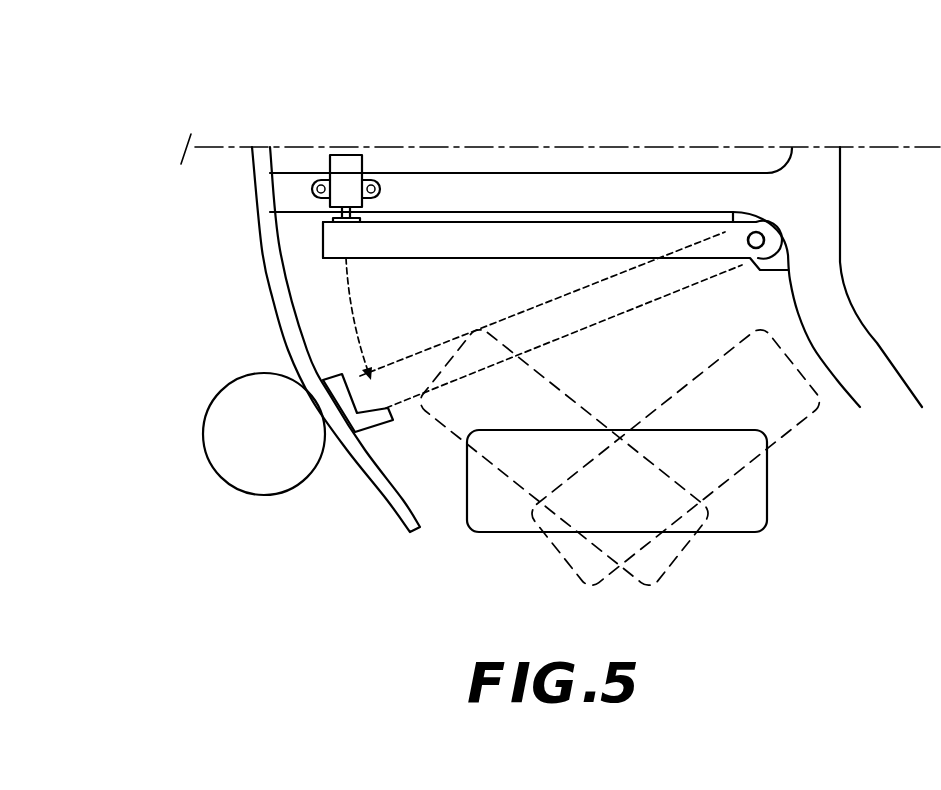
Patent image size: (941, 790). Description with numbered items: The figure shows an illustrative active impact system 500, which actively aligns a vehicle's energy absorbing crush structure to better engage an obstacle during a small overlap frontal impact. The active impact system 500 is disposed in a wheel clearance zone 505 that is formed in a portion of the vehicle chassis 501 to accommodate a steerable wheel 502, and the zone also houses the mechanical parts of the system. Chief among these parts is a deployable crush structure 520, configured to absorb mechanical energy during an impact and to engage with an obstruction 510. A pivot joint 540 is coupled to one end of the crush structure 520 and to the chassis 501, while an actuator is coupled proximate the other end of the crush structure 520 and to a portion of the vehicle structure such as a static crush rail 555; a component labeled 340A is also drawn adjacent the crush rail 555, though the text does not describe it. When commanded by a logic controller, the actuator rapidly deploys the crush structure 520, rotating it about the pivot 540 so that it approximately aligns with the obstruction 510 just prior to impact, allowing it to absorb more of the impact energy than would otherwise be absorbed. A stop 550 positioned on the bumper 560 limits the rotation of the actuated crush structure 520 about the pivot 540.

The active impact system 500 is at (137, 84).
The chassis 501 is at (827, 201).
The wheel 502 is at (745, 512).
The wheel clearance zone 505 is at (730, 312).
The obstruction 510 is at (233, 424).
The crush structure 520 is at (545, 242).
The pivot joint 540 is at (757, 240).
The stop 550 is at (360, 425).
The static crush rail 555 is at (473, 187).
The bumper 560 is at (272, 268).
The actuator bracket 340A is at (349, 168).